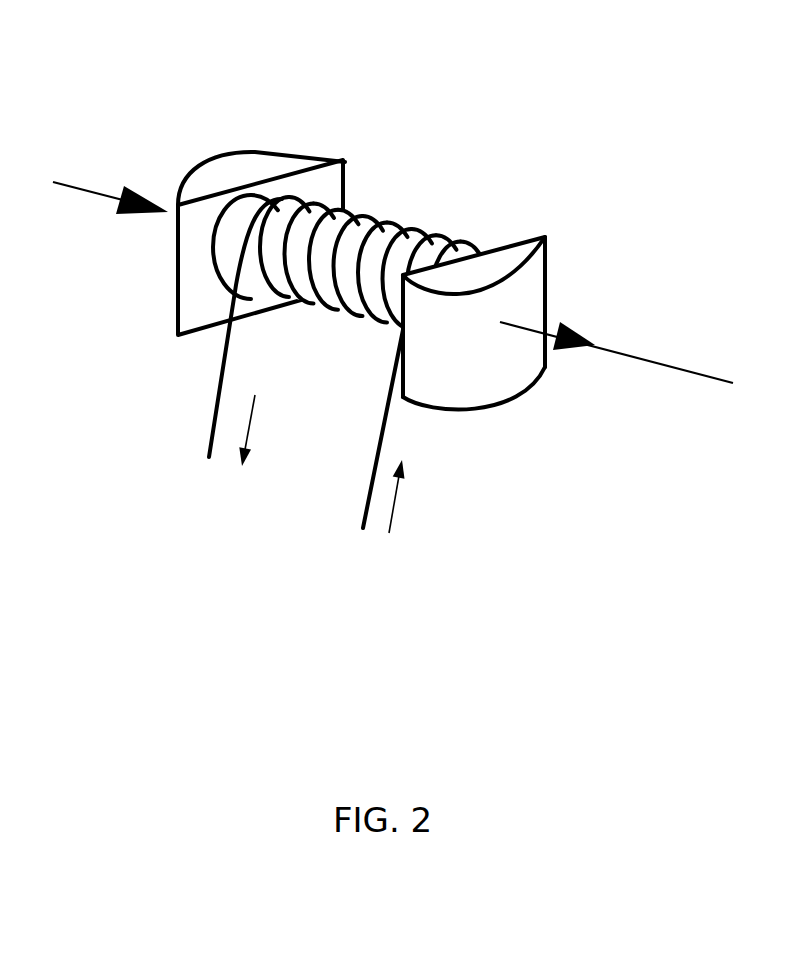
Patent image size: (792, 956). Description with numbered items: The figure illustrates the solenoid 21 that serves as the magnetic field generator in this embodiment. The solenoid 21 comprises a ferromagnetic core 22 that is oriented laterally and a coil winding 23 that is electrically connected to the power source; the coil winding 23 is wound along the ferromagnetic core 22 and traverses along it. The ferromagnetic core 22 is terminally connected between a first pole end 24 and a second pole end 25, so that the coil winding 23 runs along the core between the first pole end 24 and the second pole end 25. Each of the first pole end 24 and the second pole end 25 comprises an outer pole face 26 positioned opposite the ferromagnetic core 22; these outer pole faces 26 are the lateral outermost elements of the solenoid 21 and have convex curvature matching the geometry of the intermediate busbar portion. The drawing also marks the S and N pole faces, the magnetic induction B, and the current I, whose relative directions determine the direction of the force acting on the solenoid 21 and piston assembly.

The solenoid 21 is at (378, 286).
The ferromagnetic core 22 is at (328, 288).
The coil winding 23 is at (443, 232).
The first pole end 24 is at (346, 147).
The second pole end 25 is at (491, 212).
The outer pole face 26 is at (210, 163).